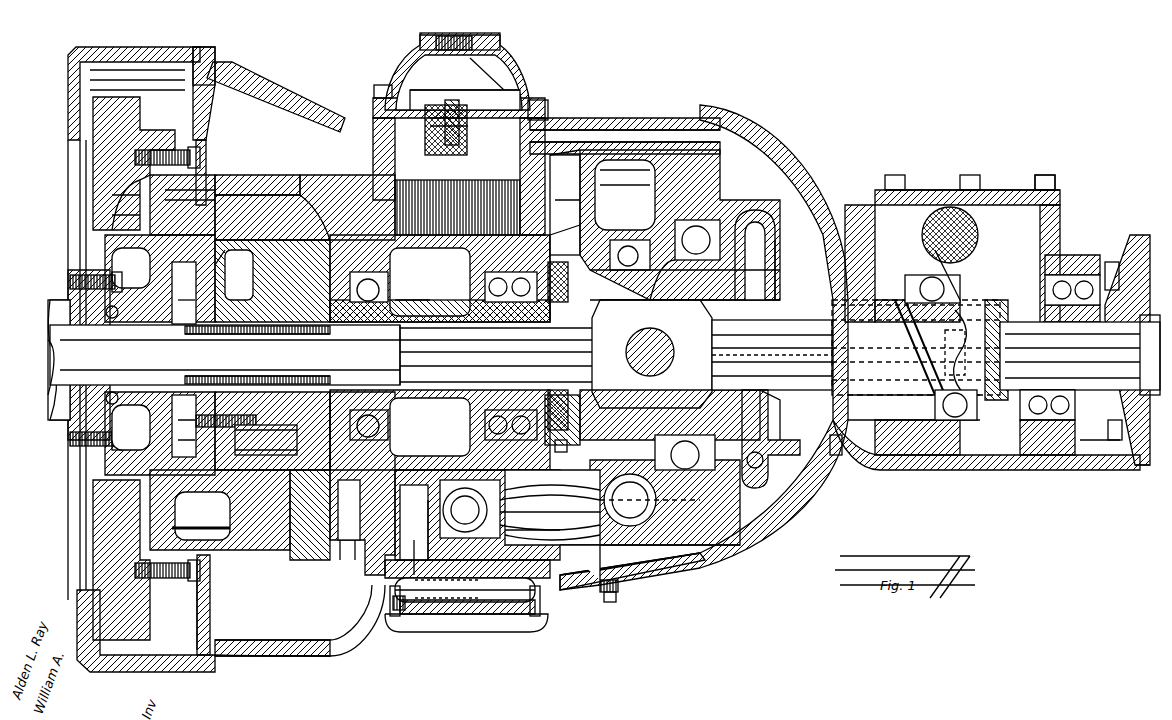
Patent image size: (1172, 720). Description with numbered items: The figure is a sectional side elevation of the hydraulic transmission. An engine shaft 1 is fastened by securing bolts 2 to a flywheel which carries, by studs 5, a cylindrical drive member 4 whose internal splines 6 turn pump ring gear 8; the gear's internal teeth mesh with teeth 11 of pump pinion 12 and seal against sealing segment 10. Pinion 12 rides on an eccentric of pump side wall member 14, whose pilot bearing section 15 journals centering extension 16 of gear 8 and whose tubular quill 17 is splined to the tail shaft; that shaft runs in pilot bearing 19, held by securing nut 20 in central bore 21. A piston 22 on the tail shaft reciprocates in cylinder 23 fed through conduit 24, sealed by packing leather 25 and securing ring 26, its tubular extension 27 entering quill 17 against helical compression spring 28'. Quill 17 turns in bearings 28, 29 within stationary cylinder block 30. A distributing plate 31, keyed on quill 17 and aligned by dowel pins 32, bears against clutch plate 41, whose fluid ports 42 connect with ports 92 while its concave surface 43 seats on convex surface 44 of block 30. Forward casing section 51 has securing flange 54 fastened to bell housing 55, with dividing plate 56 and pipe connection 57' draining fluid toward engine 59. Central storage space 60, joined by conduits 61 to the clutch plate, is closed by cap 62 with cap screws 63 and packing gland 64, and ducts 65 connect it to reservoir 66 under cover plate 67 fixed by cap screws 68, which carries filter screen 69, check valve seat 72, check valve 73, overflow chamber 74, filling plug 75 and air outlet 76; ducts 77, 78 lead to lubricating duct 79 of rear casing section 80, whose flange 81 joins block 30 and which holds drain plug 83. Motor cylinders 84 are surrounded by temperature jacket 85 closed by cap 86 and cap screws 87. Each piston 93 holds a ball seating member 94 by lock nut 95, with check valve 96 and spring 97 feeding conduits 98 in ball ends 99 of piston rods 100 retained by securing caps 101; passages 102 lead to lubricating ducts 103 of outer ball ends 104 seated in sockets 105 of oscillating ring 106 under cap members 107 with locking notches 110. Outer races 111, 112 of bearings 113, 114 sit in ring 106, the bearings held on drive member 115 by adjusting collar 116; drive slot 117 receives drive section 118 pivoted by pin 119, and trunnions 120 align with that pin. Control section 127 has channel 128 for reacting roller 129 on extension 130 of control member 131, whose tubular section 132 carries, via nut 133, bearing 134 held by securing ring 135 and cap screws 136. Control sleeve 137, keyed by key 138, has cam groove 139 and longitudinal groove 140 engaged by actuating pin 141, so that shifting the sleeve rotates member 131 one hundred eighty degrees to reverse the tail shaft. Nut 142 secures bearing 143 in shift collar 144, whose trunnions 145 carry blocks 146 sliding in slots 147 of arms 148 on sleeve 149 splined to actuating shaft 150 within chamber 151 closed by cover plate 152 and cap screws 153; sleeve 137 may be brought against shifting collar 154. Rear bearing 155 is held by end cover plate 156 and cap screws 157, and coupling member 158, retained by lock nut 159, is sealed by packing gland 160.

The shaft 1 is at (50, 330).
The securing bolts 2 is at (60, 274).
The cylindrical drive member 4 is at (258, 175).
The studs 5 is at (95, 178).
The driving teeth or splines 6 is at (232, 178).
The pump ring gear 8 is at (280, 178).
The sealing segment 10 is at (320, 185).
The teeth 11 is at (272, 281).
The pump pinion 12 is at (265, 540).
The pump side wall member 14 is at (160, 236).
The cylindrical pilot bearing section 15 is at (282, 450).
The cylindrical centering extension 16 is at (172, 524).
The central tubular driving quill section 17 is at (405, 312).
The pilot bearing 19 is at (90, 392).
The securing nut 20 is at (48, 380).
The central bore 21 is at (85, 452).
The piston 22 is at (105, 255).
The cylinder 23 is at (70, 290).
The conduit 24 is at (184, 426).
The packing leather 25 is at (105, 476).
The securing ring 26 is at (200, 428).
The tubular extension 27 is at (185, 311).
The anti-friction bearing 28 is at (383, 356).
The helical compression spring 28' is at (417, 286).
The anti-friction bearing 29 is at (480, 425).
The motor cylinder block and supporting casting 30 is at (530, 250).
The pump end wall and fluid distributing plate 31 is at (312, 540).
The supporting and aligning dowel pins 32 is at (198, 276).
The clutch plate 41 is at (330, 200).
The fluid ports 42 is at (352, 540).
The concave spherical seating and aligning surface 43 is at (352, 440).
The convex spherical seating surface 44 is at (368, 520).
The forward casing section 51 is at (280, 100).
The securing flange 54 is at (215, 55).
The bell housing or casing section 55 is at (135, 47).
The annular dividing plate 56 is at (210, 620).
The threaded pipe connection 57' is at (272, 666).
The automobile engine 59 is at (300, 418).
The fluid storage space 60 is at (435, 450).
The conduits 61 is at (400, 247).
The cap 62 is at (545, 434).
The studs or cap screws 63 is at (548, 450).
The low pressure packing gland structure 64 is at (590, 285).
The fluid ducts 65 is at (455, 190).
The fluid reservoir or storage chamber 66 is at (373, 118).
The cover plate 67 is at (405, 75).
The cap screws 68 is at (380, 95).
The filter screen 69 is at (425, 132).
The check valve seat 72 is at (480, 95).
The check valve 73 is at (455, 125).
The overflow chamber 74 is at (480, 70).
The threaded filling plug 75 is at (478, 45).
The air outlet opening 76 is at (440, 40).
The fluid duct 77 is at (530, 100).
The fluid duct 78 is at (530, 118).
The lubricating duct 79 is at (580, 135).
The rear transmission casing section 80 is at (760, 165).
The flange 81 is at (555, 600).
The drain plug 83 is at (622, 590).
The motor cylinders 84 is at (465, 582).
The temperature control jacket space 85 is at (460, 620).
The removable cap 86 is at (410, 632).
The cap screws 87 is at (392, 620).
The ports 92 is at (416, 530).
The piston 93 is at (460, 578).
The cup-shaped ball seating members 94 is at (475, 535).
The lock nuts 95 is at (412, 555).
The check valve 96 is at (432, 505).
The spring 97 is at (470, 509).
The conduits 98 is at (465, 511).
The ball ends 99 is at (518, 478).
The piston rods 100 is at (556, 200).
The securing caps 101 is at (528, 531).
The fluid passages 102 is at (520, 500).
The lubricating ducts 103 is at (735, 490).
The outer ball ends 104 is at (680, 538).
The sockets 105 is at (650, 494).
The oscillating ring 106 is at (678, 570).
The cap members 107 is at (590, 540).
The locking notches 110 is at (715, 400).
The outer race 111 is at (612, 228).
The outer race 112 is at (710, 235).
The combined radial and thrust anti-friction bearing 113 is at (640, 258).
The combined radial and thrust anti-friction bearing 114 is at (740, 240).
The drive member 115 is at (755, 270).
The threaded adjusting collar 116 is at (675, 390).
The flat sided drive slot 117 is at (710, 315).
The drive section 118 is at (590, 335).
The pivot pin 119 is at (665, 340).
The supporting trunnions 120 is at (220, 320).
The annular control section 127 is at (770, 250).
The control channel 128 is at (780, 252).
The reacting roller 129 is at (775, 470).
The extension 130 is at (778, 445).
The control member 131 is at (810, 360).
The tubular section 132 is at (895, 296).
The adjusting and securing nut 133 is at (890, 285).
The anti-friction bearing 134 is at (895, 425).
The securing ring 135 is at (845, 220).
The securing cap screws 136 is at (785, 450).
The control sleeve 137 is at (895, 412).
The securing key 138 is at (890, 372).
The angular actuating cam groove 139 is at (890, 334).
The longitudinal groove 140 is at (840, 311).
The actuating pin 141 is at (885, 335).
The securing and adjusting nut 142 is at (995, 398).
The anti-friction bearing 143 is at (990, 410).
The shift collar 144 is at (985, 425).
The trunnions 145 is at (955, 365).
The actuating blocks 146 is at (945, 350).
The slots 147 is at (995, 372).
The actuating arms 148 is at (978, 258).
The sleeve 149 is at (925, 240).
The actuating shaft 150 is at (960, 210).
The chamber 151 is at (1050, 240).
The cover plate 152 is at (1012, 192).
The cap screws 153 is at (1052, 186).
The shifting collar 154 is at (1000, 320).
The anti-friction bearing 155 is at (1060, 265).
The end cover plate 156 is at (1105, 265).
The cap screws 157 is at (1142, 240).
The coupling member 158 is at (1145, 462).
The lock nut 159 is at (1125, 440).
The packing gland structure 160 is at (1090, 440).